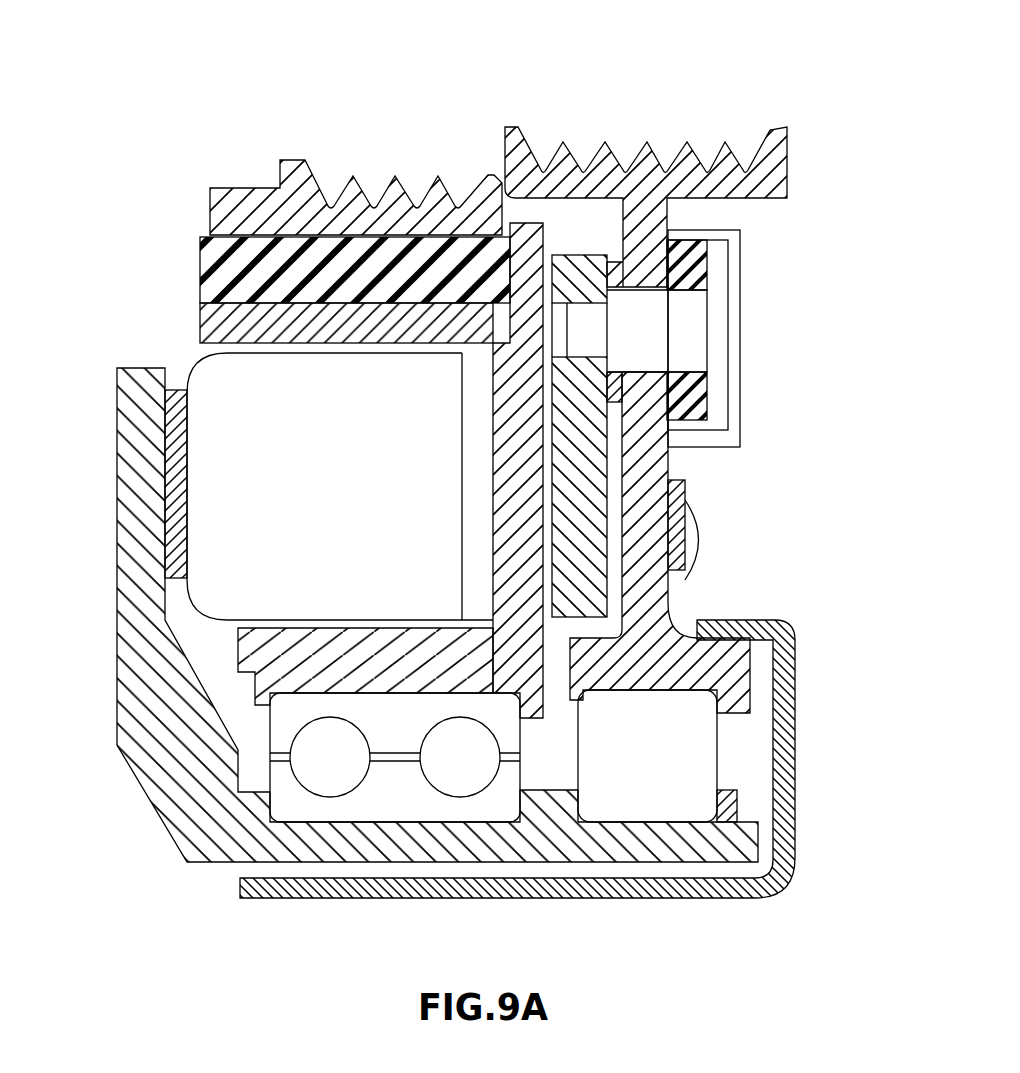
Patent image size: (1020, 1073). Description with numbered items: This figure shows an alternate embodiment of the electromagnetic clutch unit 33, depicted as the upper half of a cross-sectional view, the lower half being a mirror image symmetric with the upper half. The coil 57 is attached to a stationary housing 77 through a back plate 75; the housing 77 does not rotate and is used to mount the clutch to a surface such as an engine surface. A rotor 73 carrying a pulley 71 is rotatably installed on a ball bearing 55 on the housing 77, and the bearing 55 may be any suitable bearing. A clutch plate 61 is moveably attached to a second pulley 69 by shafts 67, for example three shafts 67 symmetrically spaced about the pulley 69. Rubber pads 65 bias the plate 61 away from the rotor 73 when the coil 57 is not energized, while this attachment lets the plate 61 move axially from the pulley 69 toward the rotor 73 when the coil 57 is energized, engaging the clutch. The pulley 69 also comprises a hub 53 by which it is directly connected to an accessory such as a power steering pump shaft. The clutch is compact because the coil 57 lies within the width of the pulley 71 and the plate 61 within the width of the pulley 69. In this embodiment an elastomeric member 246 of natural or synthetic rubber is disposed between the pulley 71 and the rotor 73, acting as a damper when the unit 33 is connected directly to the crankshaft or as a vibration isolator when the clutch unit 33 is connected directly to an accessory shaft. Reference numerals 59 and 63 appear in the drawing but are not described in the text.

The clutch unit 33 is at (746, 105).
The hub 53 is at (250, 895).
The ball bearing 55 is at (343, 783).
The coil 57 is at (415, 597).
The bearing 59 is at (640, 780).
The clutch plate 61 is at (588, 562).
The shaft 63 is at (653, 453).
The rubber pads 65 is at (688, 400).
The shafts 67 is at (640, 332).
The second pulley 69 is at (785, 180).
The pulley 71 is at (398, 178).
The rotor 73 is at (245, 323).
The back plate 75 is at (165, 453).
The housing 77 is at (198, 750).
The elastomeric member 246 is at (283, 260).